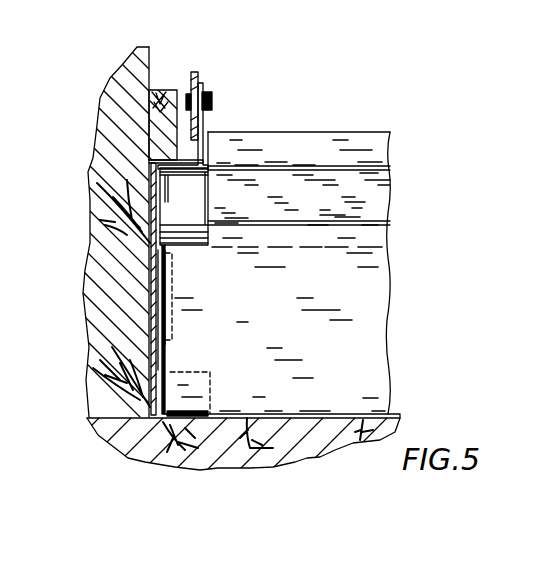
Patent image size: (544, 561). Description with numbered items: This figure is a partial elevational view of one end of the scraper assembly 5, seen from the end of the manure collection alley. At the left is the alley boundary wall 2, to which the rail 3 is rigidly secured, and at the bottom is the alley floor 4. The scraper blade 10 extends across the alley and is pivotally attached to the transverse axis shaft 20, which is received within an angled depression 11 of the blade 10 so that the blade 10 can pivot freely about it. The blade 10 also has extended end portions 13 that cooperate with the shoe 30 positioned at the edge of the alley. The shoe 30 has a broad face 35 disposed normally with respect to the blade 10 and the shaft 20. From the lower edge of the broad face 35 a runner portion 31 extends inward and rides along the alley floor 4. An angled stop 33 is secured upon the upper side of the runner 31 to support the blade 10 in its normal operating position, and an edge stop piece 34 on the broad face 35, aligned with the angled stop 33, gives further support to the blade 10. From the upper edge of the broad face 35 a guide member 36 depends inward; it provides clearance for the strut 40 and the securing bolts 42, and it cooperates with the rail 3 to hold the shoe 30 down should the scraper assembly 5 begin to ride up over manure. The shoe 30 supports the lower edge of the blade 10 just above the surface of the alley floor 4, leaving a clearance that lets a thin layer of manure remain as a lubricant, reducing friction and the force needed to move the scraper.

The alley boundary wall 2 is at (113, 78).
The rail 3 is at (160, 90).
The alley floor 4 is at (296, 420).
The scraper assembly 5 is at (310, 124).
The scraper blade 10 is at (373, 357).
The angled depression 11 is at (365, 218).
The extended end portions 13 is at (178, 330).
The transverse axis shaft 20 is at (188, 213).
The shoe 30 is at (149, 243).
The runner portion 31 is at (208, 414).
The angled stop 33 is at (212, 372).
The edge stop piece 34 is at (178, 290).
The broad face 35 is at (160, 360).
The guide member 36 is at (205, 135).
The strut 40 is at (192, 72).
The securing bolts 42 is at (210, 102).